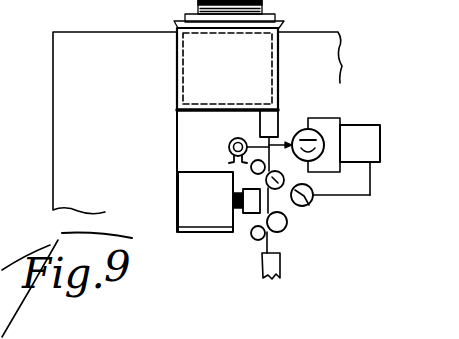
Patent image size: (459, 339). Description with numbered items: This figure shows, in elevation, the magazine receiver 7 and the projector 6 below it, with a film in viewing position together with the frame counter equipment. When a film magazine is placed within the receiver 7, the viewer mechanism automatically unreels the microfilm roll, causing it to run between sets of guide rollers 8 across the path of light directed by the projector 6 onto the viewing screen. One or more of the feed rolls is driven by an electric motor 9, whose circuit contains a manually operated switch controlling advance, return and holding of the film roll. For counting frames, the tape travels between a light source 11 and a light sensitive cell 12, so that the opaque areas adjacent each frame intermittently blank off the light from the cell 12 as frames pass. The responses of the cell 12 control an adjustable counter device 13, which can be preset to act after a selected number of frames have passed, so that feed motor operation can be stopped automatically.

The projector 6 is at (188, 193).
The magazine receiver 7 is at (187, 60).
The guide rollers 8 is at (290, 228).
The electric motor 9 is at (310, 205).
The light source 11 is at (227, 150).
The light sensitive cell 12 is at (298, 131).
The adjustable counter device 13 is at (360, 130).